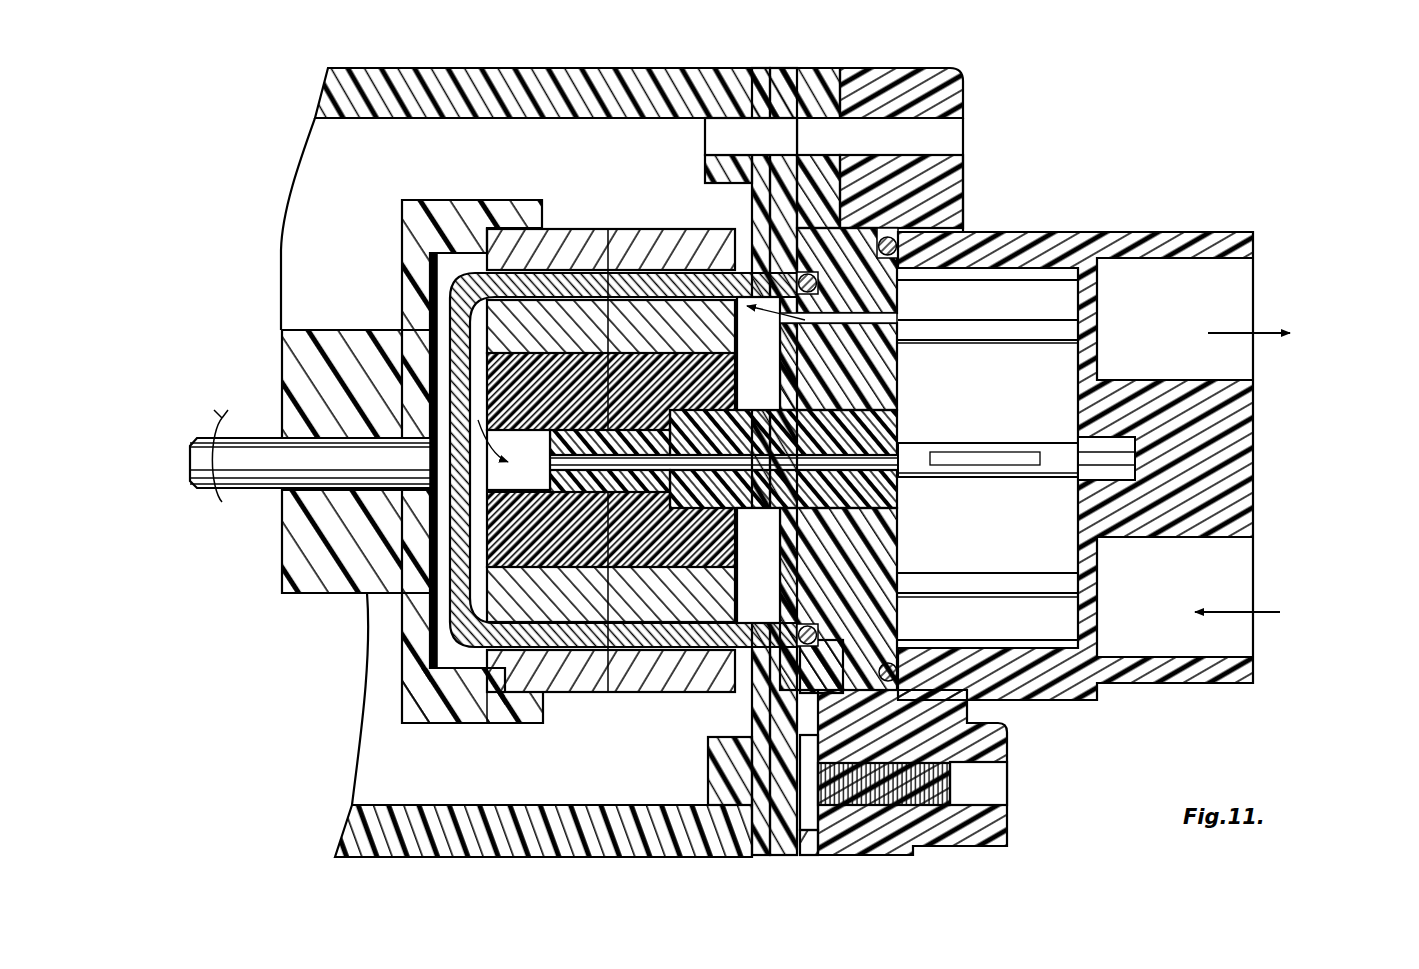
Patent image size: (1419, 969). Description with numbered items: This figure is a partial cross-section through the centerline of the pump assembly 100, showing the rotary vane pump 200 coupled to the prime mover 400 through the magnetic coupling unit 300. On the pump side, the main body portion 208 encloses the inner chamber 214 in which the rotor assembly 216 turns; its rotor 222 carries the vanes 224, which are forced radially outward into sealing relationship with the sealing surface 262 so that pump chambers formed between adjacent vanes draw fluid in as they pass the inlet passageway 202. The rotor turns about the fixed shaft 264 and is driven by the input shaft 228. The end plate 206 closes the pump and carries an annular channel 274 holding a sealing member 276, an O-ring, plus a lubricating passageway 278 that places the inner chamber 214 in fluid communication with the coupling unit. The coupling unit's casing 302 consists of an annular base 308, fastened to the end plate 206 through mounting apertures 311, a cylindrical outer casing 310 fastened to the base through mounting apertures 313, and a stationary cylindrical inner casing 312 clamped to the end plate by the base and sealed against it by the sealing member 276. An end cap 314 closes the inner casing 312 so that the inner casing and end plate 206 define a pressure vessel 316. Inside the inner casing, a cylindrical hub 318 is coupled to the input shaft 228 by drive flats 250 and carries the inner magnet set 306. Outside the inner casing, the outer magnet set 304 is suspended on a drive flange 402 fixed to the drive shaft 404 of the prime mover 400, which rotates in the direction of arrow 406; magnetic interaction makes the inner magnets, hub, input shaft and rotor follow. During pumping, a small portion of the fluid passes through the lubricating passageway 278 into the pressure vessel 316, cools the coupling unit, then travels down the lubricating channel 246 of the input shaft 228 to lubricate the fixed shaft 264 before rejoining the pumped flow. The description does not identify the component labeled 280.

The pump assembly 100 is at (737, 465).
The rotary vane pump 200 is at (1047, 473).
The inlet passageway 202 is at (1215, 657).
The end plate 206 is at (1213, 258).
The main body portion 208 is at (1192, 232).
The inner chamber 214 is at (1045, 640).
The rotor assembly 216 is at (1040, 268).
The rotor 222 is at (1058, 553).
The vanes 224 is at (1095, 420).
The input shaft 228 is at (712, 492).
The lubricating channel 246 is at (568, 472).
The drive flats 250 is at (608, 430).
The sealing surface 262 is at (995, 630).
The fixed shaft 264 is at (1130, 447).
The channel 274 is at (880, 235).
The sealing member 276 is at (815, 275).
The lubricating passageway 278 is at (900, 310).
The bearing housing 280 is at (905, 690).
The magnetic coupling unit 300 is at (602, 465).
The casing 302 is at (537, 442).
The outer magnet set 304 is at (585, 692).
The inner magnet set 306 is at (493, 323).
The base 308 is at (733, 212).
The outer casing 310 is at (322, 92).
The mounting apertures 311 is at (785, 100).
The inner casing 312 is at (404, 250).
The mounting apertures 313 is at (757, 105).
The end cap 314 is at (450, 400).
The pressure vessel 316 is at (790, 640).
The hub 318 is at (493, 550).
The prime mover 400 is at (496, 496).
The drive flange 402 is at (320, 595).
The drive shaft 404 is at (277, 487).
The arrow 406 is at (215, 420).